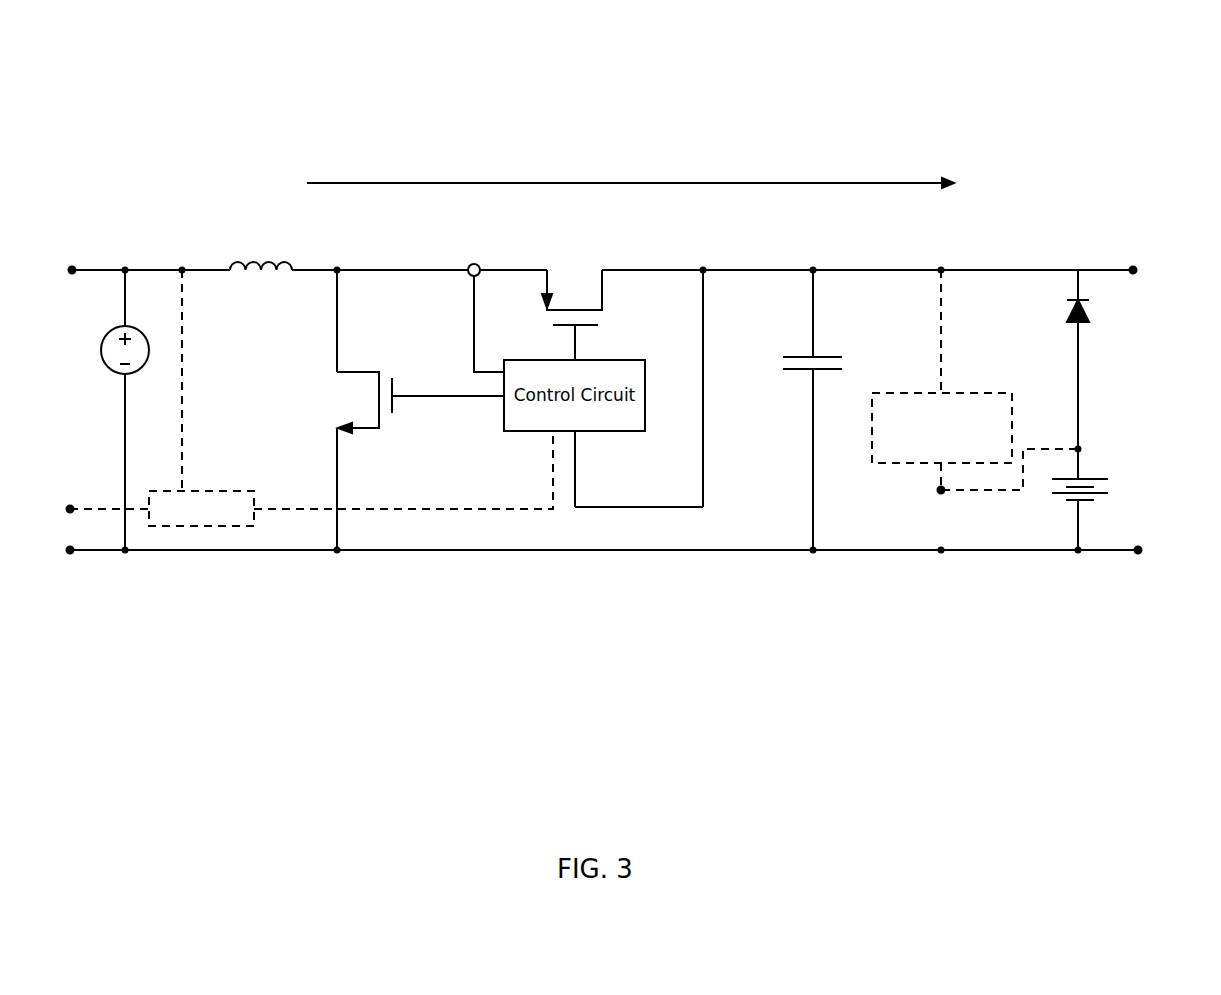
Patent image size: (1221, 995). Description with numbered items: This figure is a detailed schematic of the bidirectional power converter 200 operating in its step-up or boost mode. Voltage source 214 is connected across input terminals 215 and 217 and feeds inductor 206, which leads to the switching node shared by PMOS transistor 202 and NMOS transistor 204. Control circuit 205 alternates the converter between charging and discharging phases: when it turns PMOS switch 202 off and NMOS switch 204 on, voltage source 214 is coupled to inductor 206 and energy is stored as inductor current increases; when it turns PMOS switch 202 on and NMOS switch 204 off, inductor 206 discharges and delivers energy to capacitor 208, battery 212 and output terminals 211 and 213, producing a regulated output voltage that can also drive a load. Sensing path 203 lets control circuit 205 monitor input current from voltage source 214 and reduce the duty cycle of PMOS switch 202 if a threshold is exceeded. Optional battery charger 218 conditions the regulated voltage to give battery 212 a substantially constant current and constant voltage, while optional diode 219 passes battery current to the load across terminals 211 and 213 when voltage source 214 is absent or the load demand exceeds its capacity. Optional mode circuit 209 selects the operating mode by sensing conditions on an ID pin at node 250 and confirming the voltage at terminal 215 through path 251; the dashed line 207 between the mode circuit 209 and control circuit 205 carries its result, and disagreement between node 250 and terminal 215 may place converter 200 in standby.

The converter 200 is at (1139, 69).
The PMOS transistor 202 is at (602, 284).
The sensing path 203 is at (476, 349).
The NMOS transistor 204 is at (388, 372).
The control circuit 205 is at (504, 412).
The inductor 206 is at (262, 256).
The control signal line 207 is at (415, 509).
The capacitor 208 is at (824, 346).
The mode circuit 209 is at (255, 508).
The terminal 211 is at (1136, 256).
The battery 212 is at (1093, 465).
The terminal 213 is at (1140, 541).
The voltage source 214 is at (99, 348).
The terminal 215 is at (72, 262).
The terminal 217 is at (65, 551).
The battery charger circuit 218 is at (960, 393).
The diode 219 is at (1093, 311).
The node 250 is at (68, 509).
The path 251 is at (183, 330).